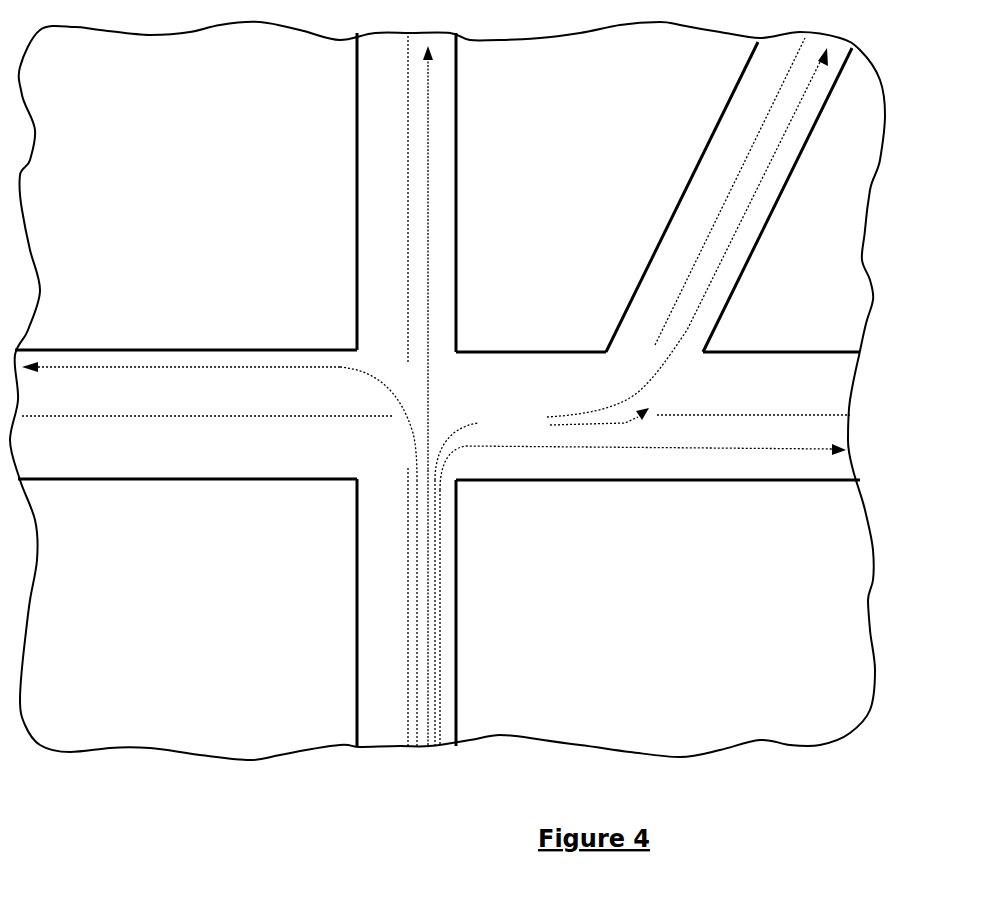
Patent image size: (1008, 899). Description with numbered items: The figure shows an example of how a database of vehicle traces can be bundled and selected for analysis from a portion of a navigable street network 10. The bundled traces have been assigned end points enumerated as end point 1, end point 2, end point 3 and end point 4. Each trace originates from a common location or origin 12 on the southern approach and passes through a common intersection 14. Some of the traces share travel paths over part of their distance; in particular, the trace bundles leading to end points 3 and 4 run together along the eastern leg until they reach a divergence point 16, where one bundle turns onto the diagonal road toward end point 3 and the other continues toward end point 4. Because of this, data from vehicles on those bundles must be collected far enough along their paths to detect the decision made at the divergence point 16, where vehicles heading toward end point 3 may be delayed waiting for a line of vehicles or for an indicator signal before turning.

The navigable street network 10 is at (846, 250).
The end point of trace bundle 1 is at (68, 366).
The end point of trace bundle 2 is at (430, 98).
The trace bundle end point 3 is at (797, 107).
The trace bundle end point 4 is at (779, 452).
The common origin 12 is at (437, 727).
The common intersection 14 is at (388, 422).
The divergence point 16 is at (630, 400).